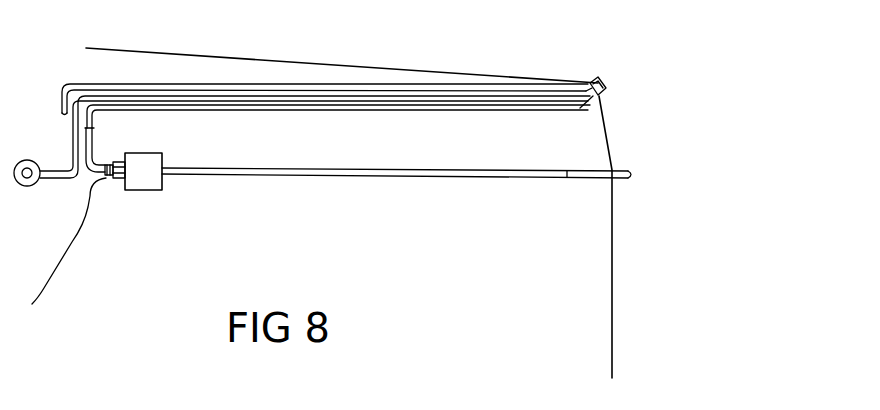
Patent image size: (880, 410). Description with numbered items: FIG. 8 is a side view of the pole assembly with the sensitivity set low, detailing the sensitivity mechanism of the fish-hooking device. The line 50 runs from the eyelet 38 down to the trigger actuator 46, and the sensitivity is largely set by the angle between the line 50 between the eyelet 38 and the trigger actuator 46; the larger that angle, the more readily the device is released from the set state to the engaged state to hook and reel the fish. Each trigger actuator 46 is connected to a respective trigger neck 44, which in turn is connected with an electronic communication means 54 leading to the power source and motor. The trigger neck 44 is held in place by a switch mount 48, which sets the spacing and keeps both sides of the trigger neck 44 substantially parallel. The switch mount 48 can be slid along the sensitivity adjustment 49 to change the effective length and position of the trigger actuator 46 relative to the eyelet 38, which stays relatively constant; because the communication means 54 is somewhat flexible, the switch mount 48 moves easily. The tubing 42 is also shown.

The eyelet 38 is at (616, 77).
The tubing 42 is at (412, 113).
The trigger neck 44 is at (456, 183).
The trigger actuator 46 is at (447, 207).
The switch mount 48 is at (173, 151).
The sensitivity adjustment 49 is at (102, 152).
The line 50 is at (357, 56).
The electronic communication means 54 is at (86, 241).